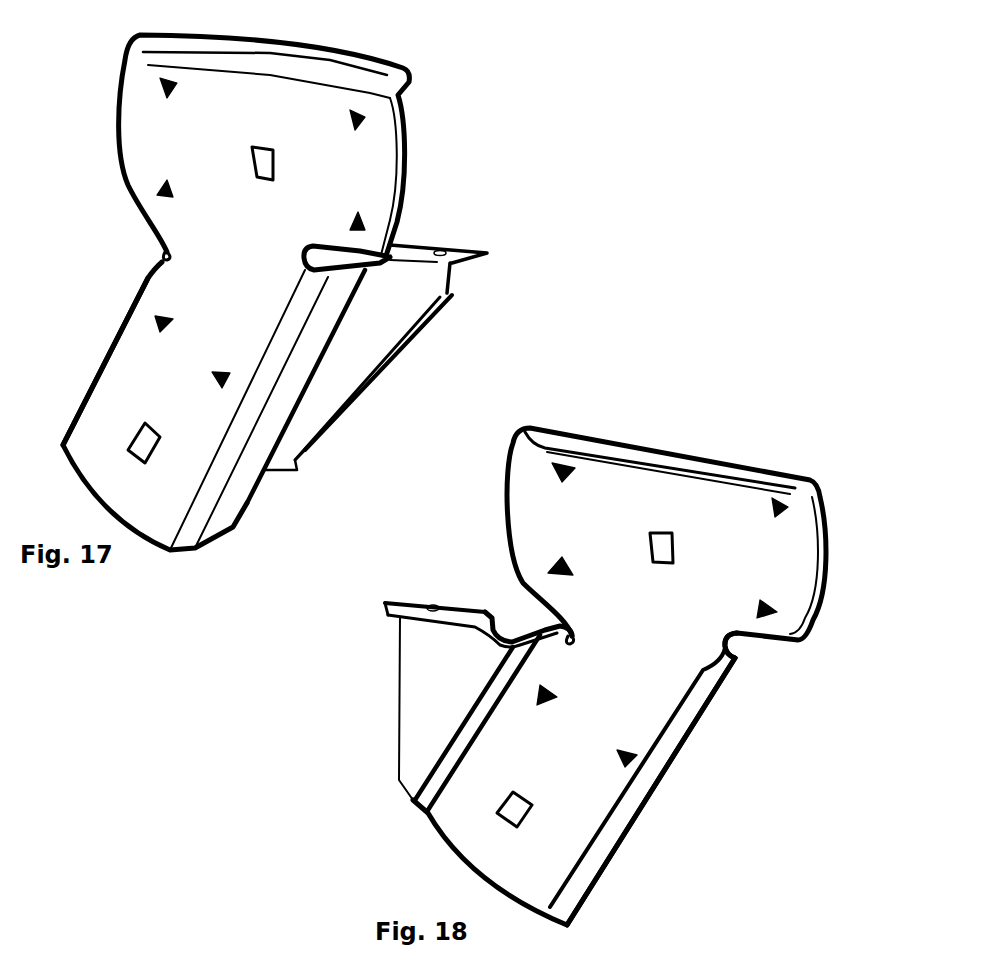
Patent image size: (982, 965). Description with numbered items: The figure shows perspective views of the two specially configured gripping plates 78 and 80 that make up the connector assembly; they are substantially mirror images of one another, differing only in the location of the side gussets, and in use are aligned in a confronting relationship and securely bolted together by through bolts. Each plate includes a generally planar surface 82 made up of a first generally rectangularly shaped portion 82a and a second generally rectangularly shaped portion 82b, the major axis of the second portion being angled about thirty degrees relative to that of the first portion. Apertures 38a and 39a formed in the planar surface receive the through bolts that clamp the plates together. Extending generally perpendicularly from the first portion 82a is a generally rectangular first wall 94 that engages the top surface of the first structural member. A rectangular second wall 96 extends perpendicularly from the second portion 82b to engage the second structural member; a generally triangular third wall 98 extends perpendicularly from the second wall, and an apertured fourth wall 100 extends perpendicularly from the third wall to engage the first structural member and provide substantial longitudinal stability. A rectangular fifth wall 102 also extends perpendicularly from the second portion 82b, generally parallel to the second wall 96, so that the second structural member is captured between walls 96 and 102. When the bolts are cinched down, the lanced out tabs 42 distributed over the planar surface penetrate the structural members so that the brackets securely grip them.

In FIG. 17, the lanced out tabs 42 is at (177, 87).
In FIG. 18, the lanced out tabs 42 is at (557, 482).
In FIG. 17, the gripping plate 78 is at (408, 147).
In FIG. 18, the gripping plate 80 is at (825, 510).
In FIG. 17, the generally planar surface 82 is at (188, 288).
In FIG. 18, the generally planar surface 82 is at (665, 657).
In FIG. 17, the first generally rectangularly shaped portion 82a is at (260, 160).
In FIG. 18, the first generally rectangularly shaped portion 82a is at (665, 540).
In FIG. 17, the second generally rectangularly shaped portion 82b is at (185, 390).
In FIG. 18, the second generally rectangularly shaped portion 82b is at (580, 785).
In FIG. 17, the first wall 94 is at (368, 67).
In FIG. 18, the first wall 94 is at (643, 460).
In FIG. 17, the second wall 96 is at (240, 493).
In FIG. 18, the second wall 96 is at (510, 672).
In FIG. 17, the third wall 98 is at (353, 352).
In FIG. 18, the third wall 98 is at (435, 687).
In FIG. 17, the fourth wall 100 is at (430, 238).
In FIG. 18, the fourth wall 100 is at (413, 602).
In FIG. 17, the fifth wall 102 is at (98, 366).
In FIG. 18, the fifth wall 102 is at (643, 792).
In FIG. 17, the aperture 38a is at (257, 173).
In FIG. 18, the aperture 38a is at (675, 547).
In FIG. 17, the aperture 39a is at (135, 442).
In FIG. 18, the aperture 39a is at (517, 832).